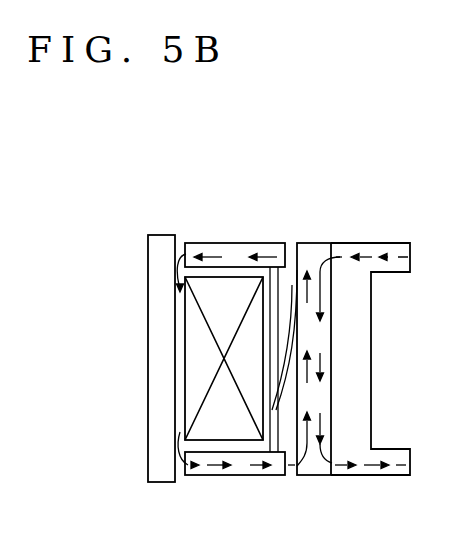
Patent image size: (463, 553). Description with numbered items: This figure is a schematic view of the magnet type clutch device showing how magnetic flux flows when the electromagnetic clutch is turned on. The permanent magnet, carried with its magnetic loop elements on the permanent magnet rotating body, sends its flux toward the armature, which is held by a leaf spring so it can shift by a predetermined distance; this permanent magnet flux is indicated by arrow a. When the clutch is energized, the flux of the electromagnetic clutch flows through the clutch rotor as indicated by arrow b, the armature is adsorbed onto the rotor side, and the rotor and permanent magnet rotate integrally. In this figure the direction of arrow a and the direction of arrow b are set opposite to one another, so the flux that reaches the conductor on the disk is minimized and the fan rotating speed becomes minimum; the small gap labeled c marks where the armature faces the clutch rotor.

The arrow a is at (259, 245).
The arrow b is at (340, 466).
The magnetic gap c is at (283, 362).